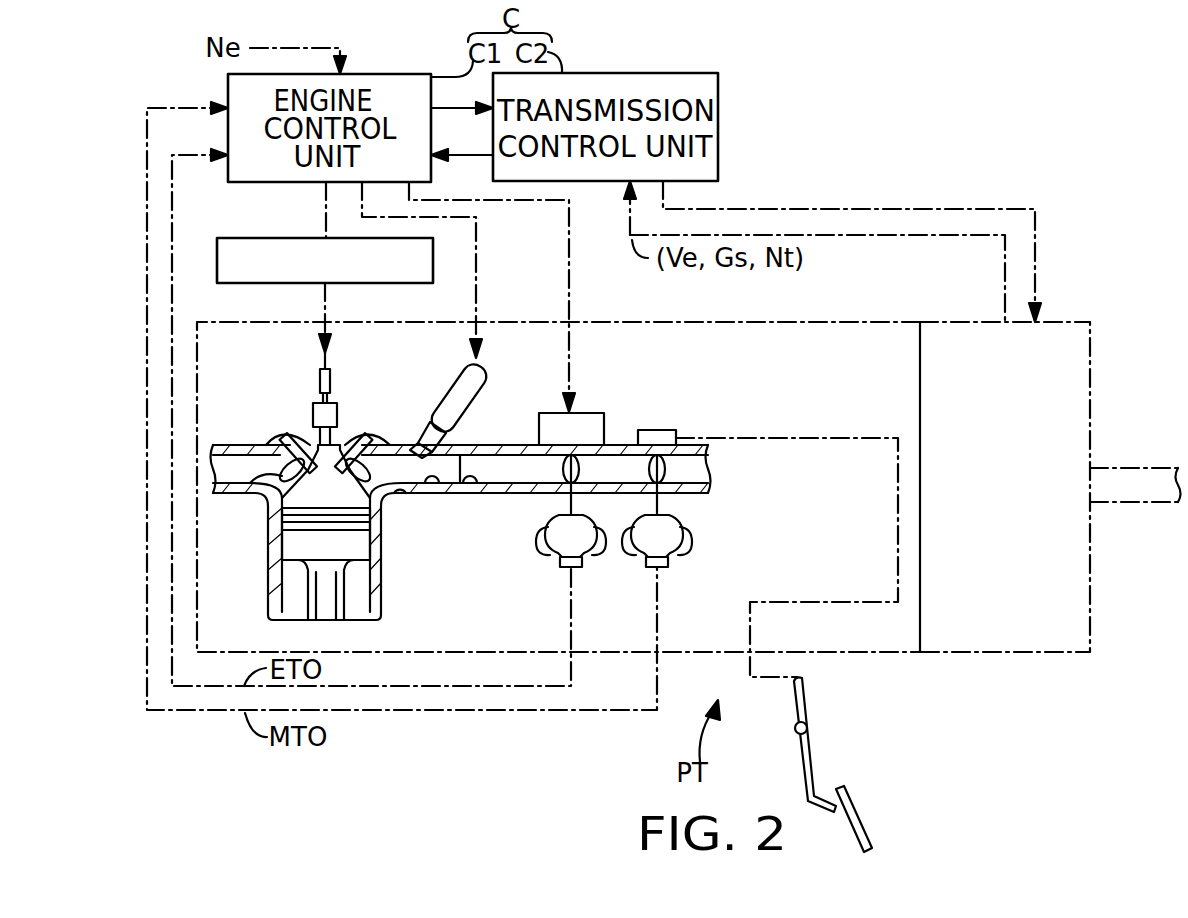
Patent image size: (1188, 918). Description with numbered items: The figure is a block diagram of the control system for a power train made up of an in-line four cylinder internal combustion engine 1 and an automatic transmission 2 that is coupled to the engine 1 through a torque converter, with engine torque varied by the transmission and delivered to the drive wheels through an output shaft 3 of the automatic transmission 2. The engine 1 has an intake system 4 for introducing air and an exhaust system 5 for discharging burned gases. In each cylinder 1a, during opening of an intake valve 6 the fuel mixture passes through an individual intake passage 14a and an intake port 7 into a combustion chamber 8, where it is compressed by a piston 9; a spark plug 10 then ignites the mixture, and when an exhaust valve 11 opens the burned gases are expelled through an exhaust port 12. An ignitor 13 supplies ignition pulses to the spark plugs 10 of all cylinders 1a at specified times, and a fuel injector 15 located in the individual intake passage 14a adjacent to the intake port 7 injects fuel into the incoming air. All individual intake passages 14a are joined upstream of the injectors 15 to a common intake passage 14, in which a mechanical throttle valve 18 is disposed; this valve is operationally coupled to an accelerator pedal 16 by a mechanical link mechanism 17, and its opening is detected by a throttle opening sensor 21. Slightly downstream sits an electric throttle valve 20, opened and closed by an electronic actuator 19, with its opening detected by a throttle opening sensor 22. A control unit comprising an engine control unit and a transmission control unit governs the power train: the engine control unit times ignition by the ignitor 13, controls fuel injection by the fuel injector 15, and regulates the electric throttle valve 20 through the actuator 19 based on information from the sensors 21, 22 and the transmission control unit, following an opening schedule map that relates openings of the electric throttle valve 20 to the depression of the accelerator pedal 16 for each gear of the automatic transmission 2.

The internal combustion engine 1 is at (410, 596).
The cylinder 1a is at (280, 605).
The automatic transmission 2 is at (1050, 652).
The output shaft 3 is at (1117, 502).
The intake system 4 is at (505, 410).
The exhaust system 5 is at (217, 428).
The intake valve 6 is at (395, 445).
The intake port 7 is at (401, 496).
The combustion chamber 8 is at (349, 503).
The piston 9 is at (287, 552).
The spark plug 10 is at (316, 428).
The exhaust valve 11 is at (288, 462).
The exhaust port 12 is at (252, 493).
The ignitor 13 is at (217, 240).
The common intake passage 14 is at (472, 486).
The individual intake passage 14a is at (432, 486).
The fuel injector 15 is at (453, 386).
The accelerator pedal 16 is at (842, 788).
The mechanical link mechanism 17 is at (800, 432).
The mechanical throttle valve 18 is at (733, 471).
The electronic actuator 19 is at (604, 418).
The electric throttle valve 20 is at (560, 473).
The throttle opening sensor 21 is at (690, 535).
The throttle opening sensor 22 is at (603, 545).